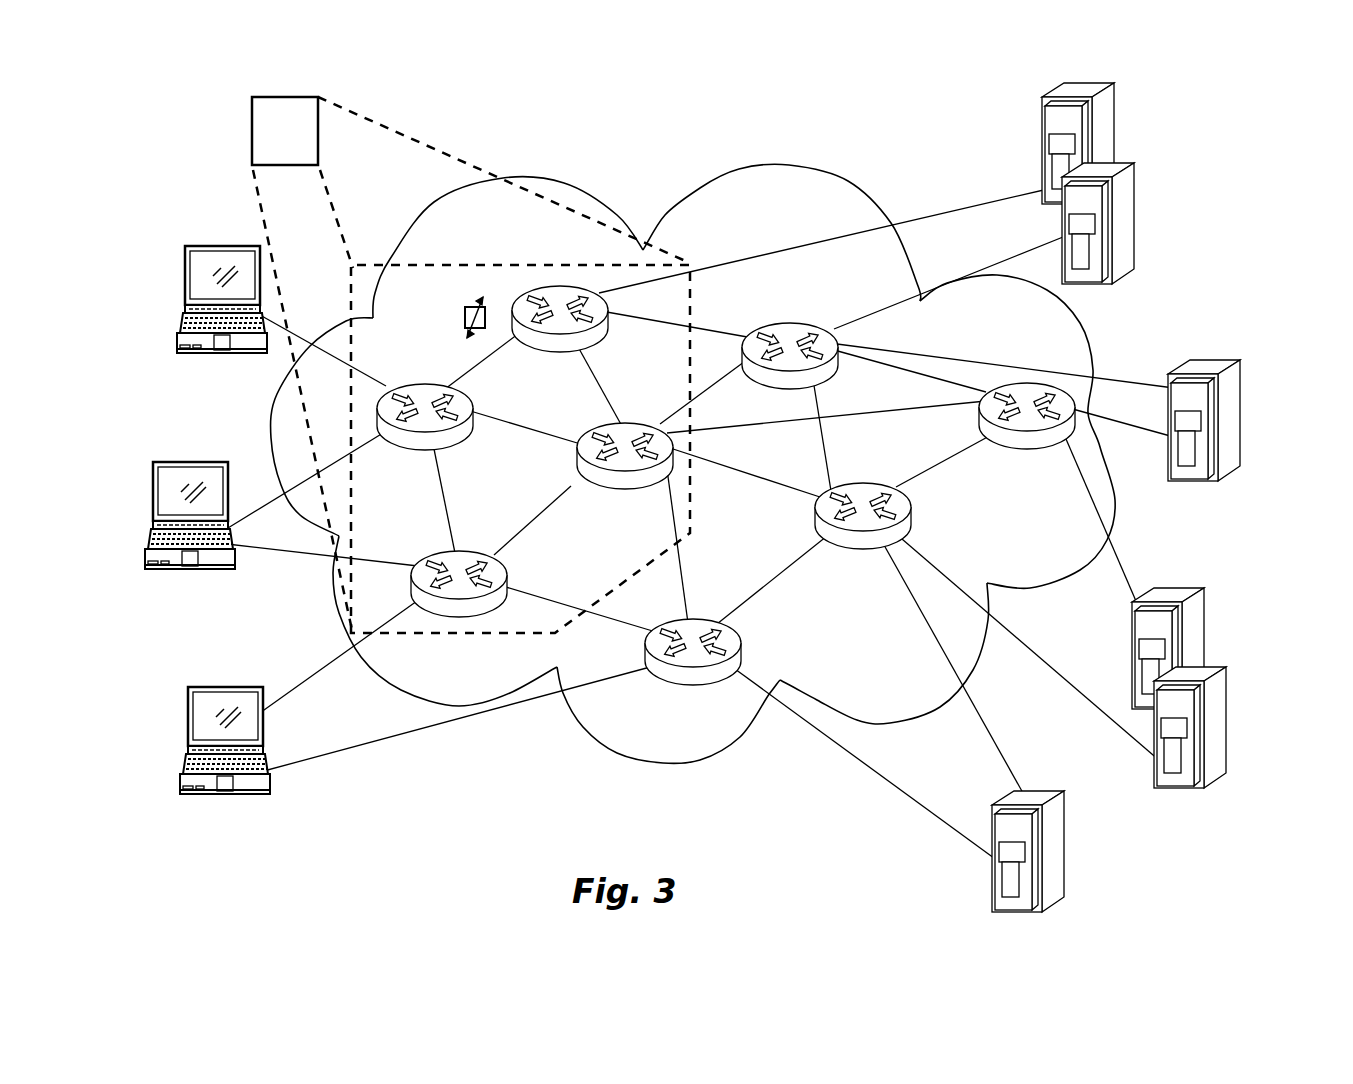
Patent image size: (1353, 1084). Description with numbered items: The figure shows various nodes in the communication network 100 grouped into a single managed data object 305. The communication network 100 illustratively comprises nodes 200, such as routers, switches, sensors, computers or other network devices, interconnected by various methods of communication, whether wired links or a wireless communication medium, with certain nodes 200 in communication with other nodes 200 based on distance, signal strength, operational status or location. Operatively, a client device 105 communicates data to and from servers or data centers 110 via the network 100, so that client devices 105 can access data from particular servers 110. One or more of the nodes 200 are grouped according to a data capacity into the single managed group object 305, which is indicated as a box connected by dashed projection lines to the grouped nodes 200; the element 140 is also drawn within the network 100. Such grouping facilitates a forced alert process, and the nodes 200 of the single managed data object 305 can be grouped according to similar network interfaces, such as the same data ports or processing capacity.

The communication network 100 is at (766, 165).
The client device 105 is at (208, 246).
The server 110 is at (1114, 273).
The data packet 140 is at (465, 316).
The node 200 is at (410, 381).
The single managed data object 305 is at (252, 118).